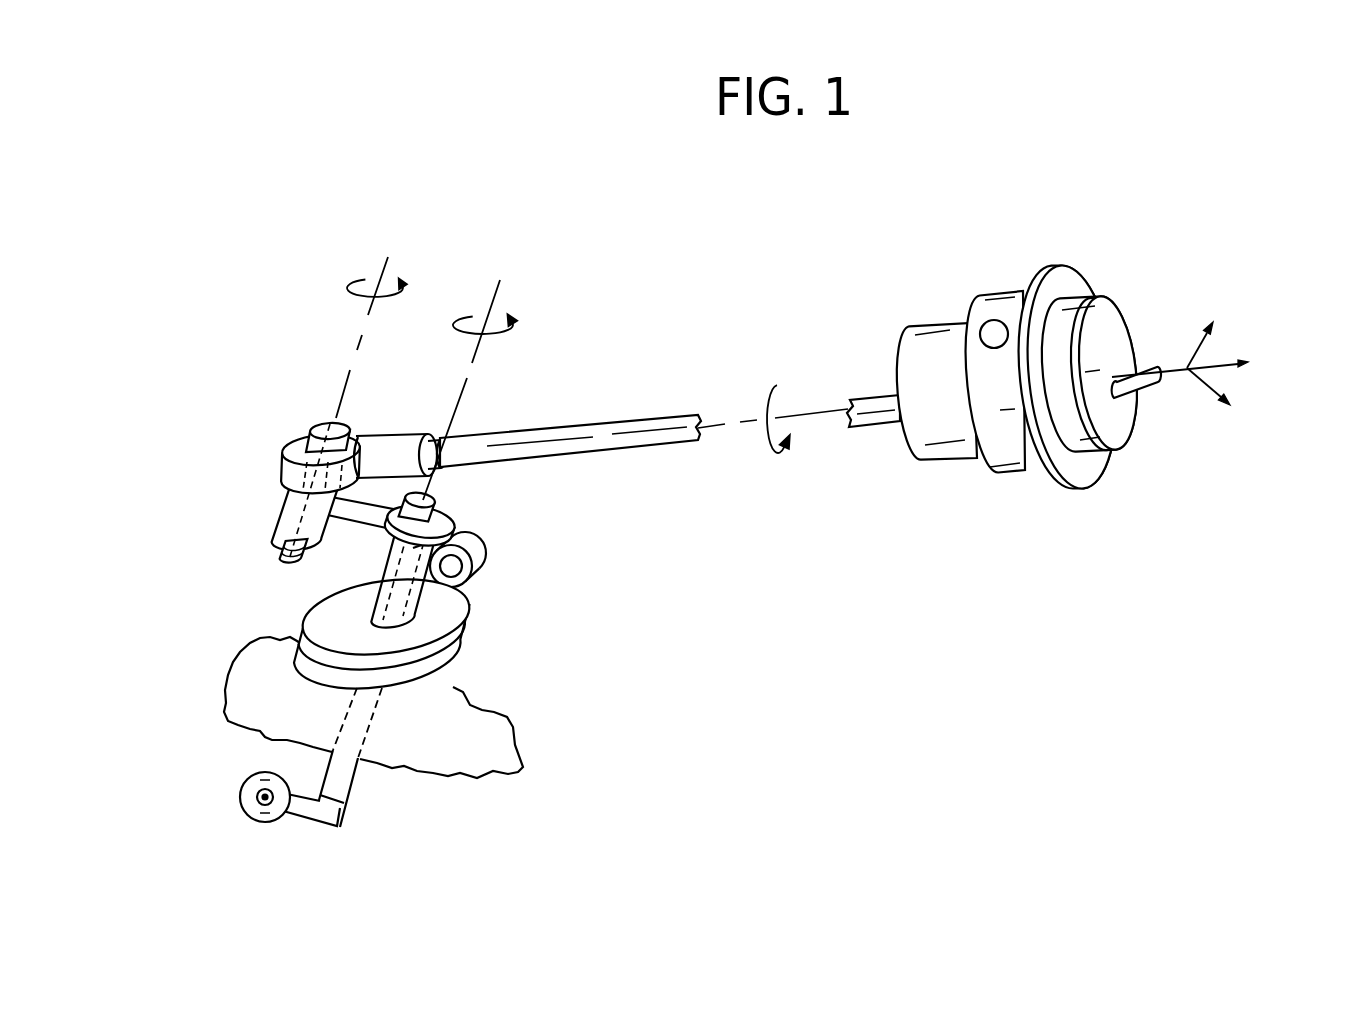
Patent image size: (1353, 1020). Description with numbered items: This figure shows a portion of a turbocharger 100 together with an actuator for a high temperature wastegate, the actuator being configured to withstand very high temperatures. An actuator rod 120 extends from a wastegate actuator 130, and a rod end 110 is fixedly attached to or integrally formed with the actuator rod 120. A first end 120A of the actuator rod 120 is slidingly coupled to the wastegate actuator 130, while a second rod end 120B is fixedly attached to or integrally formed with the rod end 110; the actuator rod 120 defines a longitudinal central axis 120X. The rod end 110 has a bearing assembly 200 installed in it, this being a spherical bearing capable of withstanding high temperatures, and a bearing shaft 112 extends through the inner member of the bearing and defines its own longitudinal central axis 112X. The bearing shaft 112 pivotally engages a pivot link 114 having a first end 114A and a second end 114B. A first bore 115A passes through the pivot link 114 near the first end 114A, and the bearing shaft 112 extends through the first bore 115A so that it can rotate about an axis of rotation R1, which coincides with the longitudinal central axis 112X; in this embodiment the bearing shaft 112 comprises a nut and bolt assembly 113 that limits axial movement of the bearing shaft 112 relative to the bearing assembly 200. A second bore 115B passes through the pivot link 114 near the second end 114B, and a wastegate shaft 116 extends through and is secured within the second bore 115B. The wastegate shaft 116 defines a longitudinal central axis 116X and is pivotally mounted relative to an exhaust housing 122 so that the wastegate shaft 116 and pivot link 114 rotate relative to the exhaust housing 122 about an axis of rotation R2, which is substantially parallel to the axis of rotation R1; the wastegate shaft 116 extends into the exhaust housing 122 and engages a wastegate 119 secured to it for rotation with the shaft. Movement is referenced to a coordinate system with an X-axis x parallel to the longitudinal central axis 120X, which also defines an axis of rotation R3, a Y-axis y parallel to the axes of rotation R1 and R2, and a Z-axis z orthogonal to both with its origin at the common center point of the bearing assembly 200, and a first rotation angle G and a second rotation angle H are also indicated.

The turbocharger 100 is at (421, 167).
The rod end 110 is at (288, 448).
The bearing shaft 112 is at (283, 562).
The longitudinal central axis 112X is at (368, 315).
The nut and bolt assembly 113 is at (350, 420).
The pivot link 114 is at (347, 538).
The first end 114A is at (275, 505).
The second end 114B is at (475, 580).
The first bore 115A is at (300, 473).
The second bore 115B is at (453, 508).
The wastegate shaft 116 is at (353, 780).
The longitudinal central axis 116X is at (472, 363).
The wastegate 119 is at (242, 810).
The actuator rod 120 is at (648, 442).
The first end 120A is at (877, 423).
The second rod end 120B is at (435, 443).
The longitudinal central axis 120X is at (713, 423).
The exhaust housing 122 is at (225, 712).
The wastegate actuator 130 is at (1010, 450).
The bearing assembly 200 is at (298, 425).
The first rotation angle G is at (363, 277).
The second rotation angle H is at (477, 310).
The axis of rotation R1 is at (377, 255).
The axis of rotation R2 is at (486, 290).
The axis of rotation R3 is at (785, 408).
The X-axis x is at (1222, 360).
The Y-axis y is at (1197, 352).
The Z-axis z is at (1207, 387).